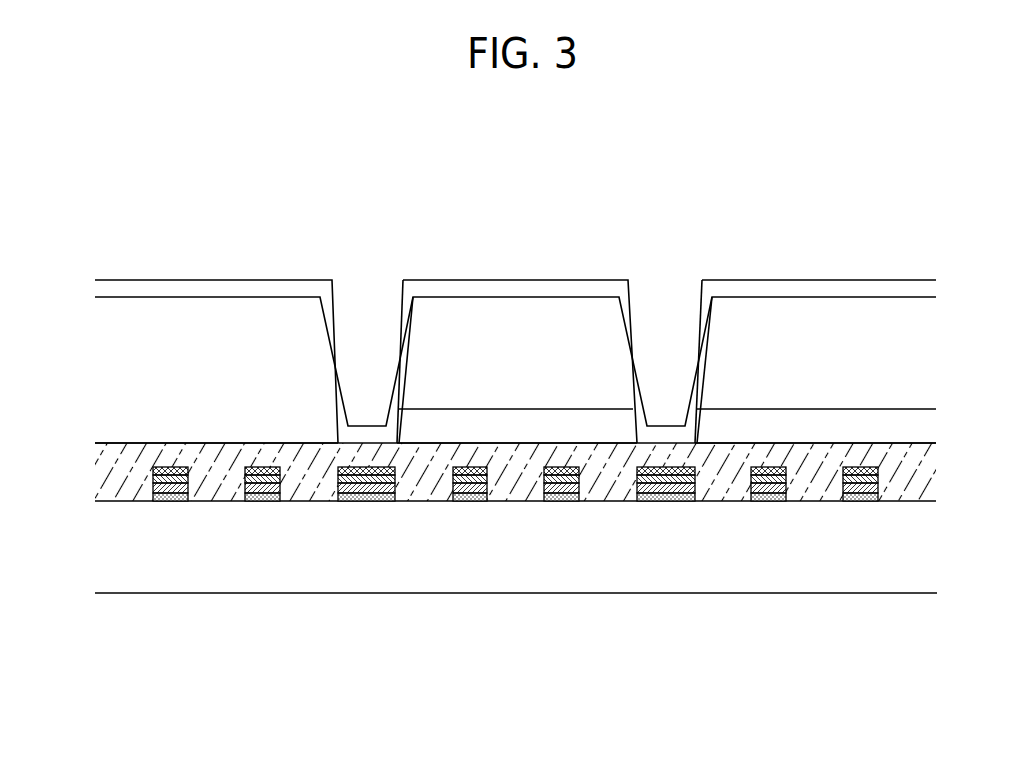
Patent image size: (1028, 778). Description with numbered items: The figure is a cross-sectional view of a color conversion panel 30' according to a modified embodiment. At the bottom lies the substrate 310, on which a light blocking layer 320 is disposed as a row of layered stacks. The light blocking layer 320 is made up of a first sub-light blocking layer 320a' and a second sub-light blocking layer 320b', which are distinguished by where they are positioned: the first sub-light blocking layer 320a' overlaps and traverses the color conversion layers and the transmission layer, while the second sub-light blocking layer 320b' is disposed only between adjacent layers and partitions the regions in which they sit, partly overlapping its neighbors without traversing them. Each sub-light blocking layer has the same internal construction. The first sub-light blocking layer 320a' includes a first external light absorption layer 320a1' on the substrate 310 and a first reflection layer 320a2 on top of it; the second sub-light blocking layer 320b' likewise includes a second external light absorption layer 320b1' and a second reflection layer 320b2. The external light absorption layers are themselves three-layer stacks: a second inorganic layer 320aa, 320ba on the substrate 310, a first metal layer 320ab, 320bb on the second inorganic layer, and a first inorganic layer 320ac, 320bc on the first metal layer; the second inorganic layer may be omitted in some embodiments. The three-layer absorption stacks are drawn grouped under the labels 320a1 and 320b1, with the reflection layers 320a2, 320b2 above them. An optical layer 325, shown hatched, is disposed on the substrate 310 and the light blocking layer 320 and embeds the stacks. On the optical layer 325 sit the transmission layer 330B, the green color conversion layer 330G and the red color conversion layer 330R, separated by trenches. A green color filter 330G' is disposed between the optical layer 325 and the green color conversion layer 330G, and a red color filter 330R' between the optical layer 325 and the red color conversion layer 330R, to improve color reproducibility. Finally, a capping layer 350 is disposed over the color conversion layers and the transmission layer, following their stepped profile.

The color conversion panel 30' is at (951, 223).
The capping layer 350 is at (923, 288).
The transmission layer 330B is at (227, 330).
The green color conversion layer 330G is at (516, 314).
The green color filter 330G' is at (517, 331).
The red color conversion layer 330R is at (816, 314).
The red color filter 330R' is at (815, 331).
The optical layer 325 is at (923, 457).
The substrate 310 is at (923, 552).
The light blocking layer 320 is at (212, 642).
The first sub-light blocking layer 320a' is at (590, 579).
The first external light absorption layer 320a1' is at (590, 579).
The first multilayer 320a1 is at (551, 583).
The first reflection layer 320a2 is at (877, 473).
The second inorganic layer 320aa is at (870, 502).
The first metal layer 320ab is at (857, 502).
The first inorganic layer 320ac is at (843, 502).
The second sub-light blocking layer 320b' is at (480, 605).
The second external light absorption layer 320b1' is at (516, 605).
The second multilayer 320b1 is at (541, 583).
The second reflection layer 320b2 is at (640, 470).
The second inorganic layer 320ba is at (682, 502).
The first metal layer 320bb is at (662, 502).
The first inorganic layer 320bc is at (642, 502).